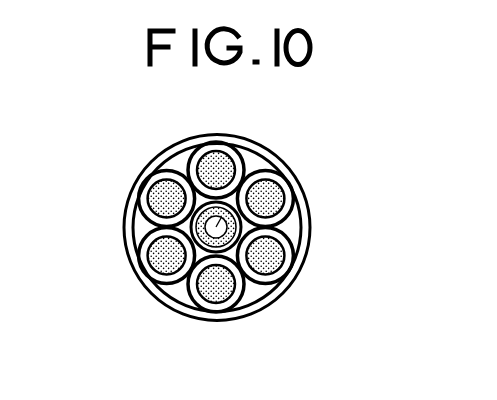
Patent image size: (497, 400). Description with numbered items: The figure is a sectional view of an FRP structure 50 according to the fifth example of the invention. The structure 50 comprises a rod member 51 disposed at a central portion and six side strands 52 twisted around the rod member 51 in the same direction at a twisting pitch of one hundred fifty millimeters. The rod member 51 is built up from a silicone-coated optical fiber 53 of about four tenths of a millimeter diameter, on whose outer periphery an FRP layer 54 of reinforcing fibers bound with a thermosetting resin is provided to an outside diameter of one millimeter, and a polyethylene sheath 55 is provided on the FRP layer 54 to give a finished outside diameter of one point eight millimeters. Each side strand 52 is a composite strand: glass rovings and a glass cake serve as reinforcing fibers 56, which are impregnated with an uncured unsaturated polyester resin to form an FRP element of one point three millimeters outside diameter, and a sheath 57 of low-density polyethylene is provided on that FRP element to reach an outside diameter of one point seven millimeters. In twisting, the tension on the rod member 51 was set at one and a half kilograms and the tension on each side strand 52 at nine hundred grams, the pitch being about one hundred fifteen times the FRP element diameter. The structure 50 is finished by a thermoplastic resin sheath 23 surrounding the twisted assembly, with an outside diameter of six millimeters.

The FRP structure 50 is at (246, 231).
The thermoplastic resin sheath 23 is at (137, 218).
The rod member 51 is at (148, 229).
The side strand 52 is at (251, 228).
The silicone-coated optical fiber 53 is at (188, 175).
The FRP layer 54 is at (258, 173).
The polyethylene sheath 55 is at (244, 272).
The reinforcing fibers 56 is at (290, 247).
The sheath 57 is at (282, 276).